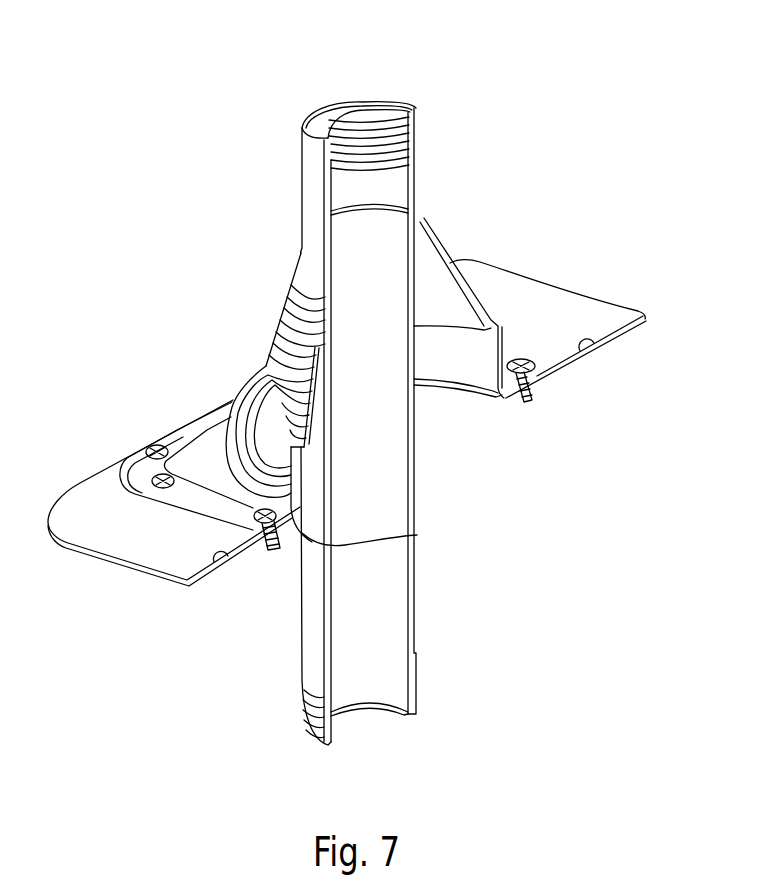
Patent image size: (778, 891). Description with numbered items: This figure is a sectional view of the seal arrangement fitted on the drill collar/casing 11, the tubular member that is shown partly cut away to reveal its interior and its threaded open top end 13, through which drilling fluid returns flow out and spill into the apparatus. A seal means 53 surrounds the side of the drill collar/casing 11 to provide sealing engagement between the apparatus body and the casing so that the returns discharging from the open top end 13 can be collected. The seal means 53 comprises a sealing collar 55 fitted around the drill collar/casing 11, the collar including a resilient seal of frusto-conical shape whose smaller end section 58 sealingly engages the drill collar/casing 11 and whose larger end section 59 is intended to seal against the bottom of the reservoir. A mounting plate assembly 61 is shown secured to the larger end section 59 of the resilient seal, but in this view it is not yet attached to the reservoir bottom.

The drill collar/casing 11 is at (301, 169).
The open top end 13 is at (362, 114).
The seal means 53 is at (290, 350).
The sealing collar 55 is at (297, 322).
The smaller end section 58 is at (305, 269).
The larger end section 59 is at (417, 535).
The mounting plate assembly 61 is at (217, 502).